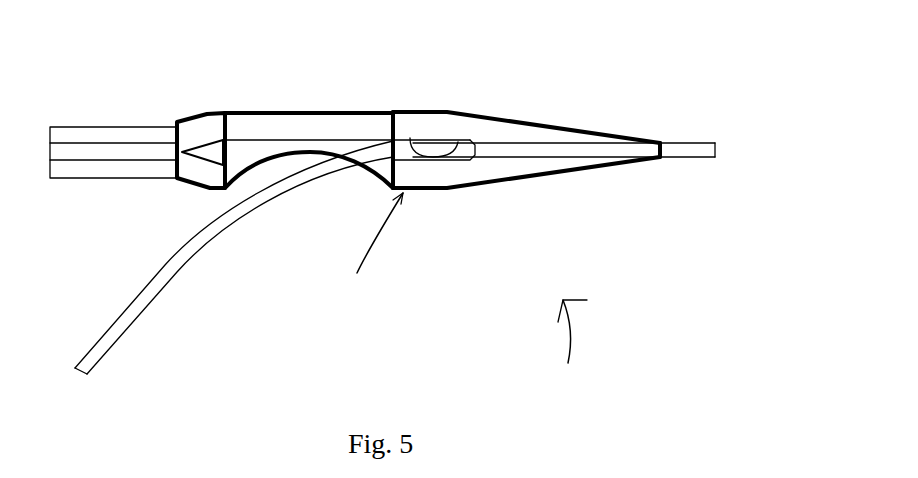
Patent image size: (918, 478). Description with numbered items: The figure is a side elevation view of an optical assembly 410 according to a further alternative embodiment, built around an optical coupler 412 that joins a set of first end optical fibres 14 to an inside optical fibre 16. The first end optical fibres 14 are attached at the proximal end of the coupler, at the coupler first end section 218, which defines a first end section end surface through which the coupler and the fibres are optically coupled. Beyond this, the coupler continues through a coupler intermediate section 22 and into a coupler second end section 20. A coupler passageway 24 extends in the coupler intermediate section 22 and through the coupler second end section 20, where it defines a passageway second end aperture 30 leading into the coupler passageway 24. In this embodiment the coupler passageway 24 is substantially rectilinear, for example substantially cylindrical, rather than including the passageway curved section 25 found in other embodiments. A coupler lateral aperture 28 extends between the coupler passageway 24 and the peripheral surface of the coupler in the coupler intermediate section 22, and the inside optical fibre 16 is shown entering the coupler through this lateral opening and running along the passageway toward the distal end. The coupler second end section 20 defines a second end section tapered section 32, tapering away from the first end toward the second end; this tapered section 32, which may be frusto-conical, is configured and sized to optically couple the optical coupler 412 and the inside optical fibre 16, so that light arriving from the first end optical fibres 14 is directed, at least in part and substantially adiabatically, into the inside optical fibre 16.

The first end optical fibre 14 is at (65, 133).
The inside optical fibre 16 is at (103, 352).
The coupler second end section 20 is at (554, 131).
The coupler intermediate section 22 is at (312, 178).
The coupler passageway 24 is at (460, 145).
The passageway curved section 25 is at (309, 208).
The coupler lateral aperture 28 is at (365, 161).
The passageway second end aperture 30 is at (680, 127).
The second end section tapered section 32 is at (660, 177).
The coupler first end section 218 is at (228, 107).
The optical assembly 410 is at (572, 342).
The optical coupler 412 is at (380, 243).